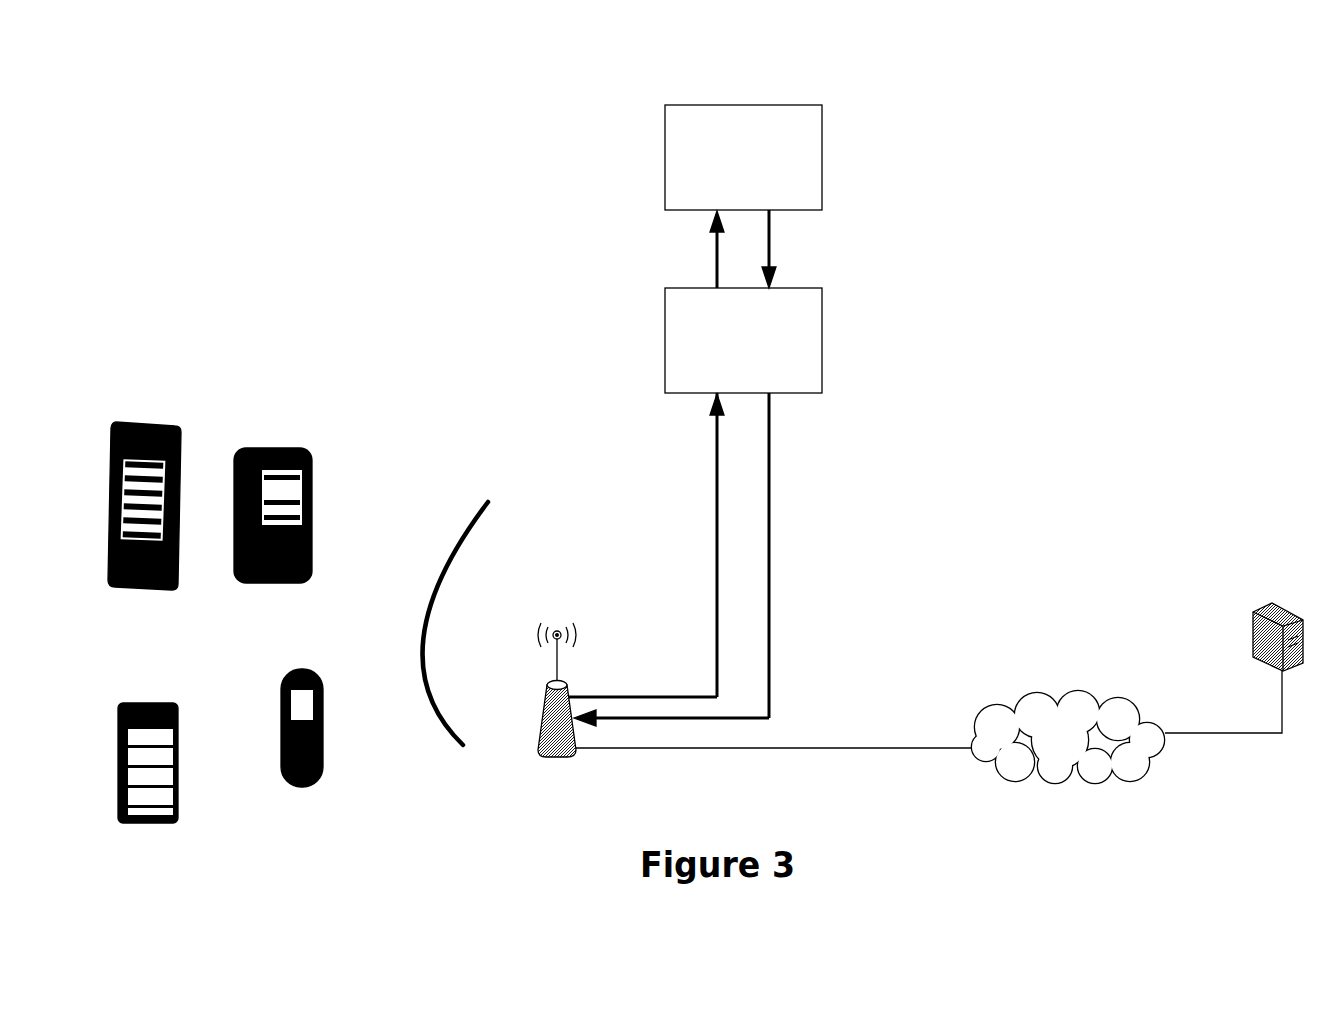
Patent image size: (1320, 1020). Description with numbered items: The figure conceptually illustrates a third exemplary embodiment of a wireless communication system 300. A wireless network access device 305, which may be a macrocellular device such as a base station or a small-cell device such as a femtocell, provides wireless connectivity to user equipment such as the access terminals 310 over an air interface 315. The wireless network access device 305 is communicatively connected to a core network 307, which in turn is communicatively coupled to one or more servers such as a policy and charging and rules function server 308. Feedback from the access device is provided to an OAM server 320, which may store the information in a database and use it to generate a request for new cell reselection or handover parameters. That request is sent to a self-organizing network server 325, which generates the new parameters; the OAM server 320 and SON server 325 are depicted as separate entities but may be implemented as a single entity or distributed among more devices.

The wireless communication system 300 is at (1108, 159).
The wireless network access device 305 is at (566, 758).
The core network 307 is at (1068, 737).
The policy and charging and rules function (PCRF) server 308 is at (1251, 634).
The access terminals 310 is at (280, 447).
The air interface 315 is at (462, 523).
The OAM server 320 is at (743, 340).
The self-organizing network (SON) server 325 is at (743, 157).